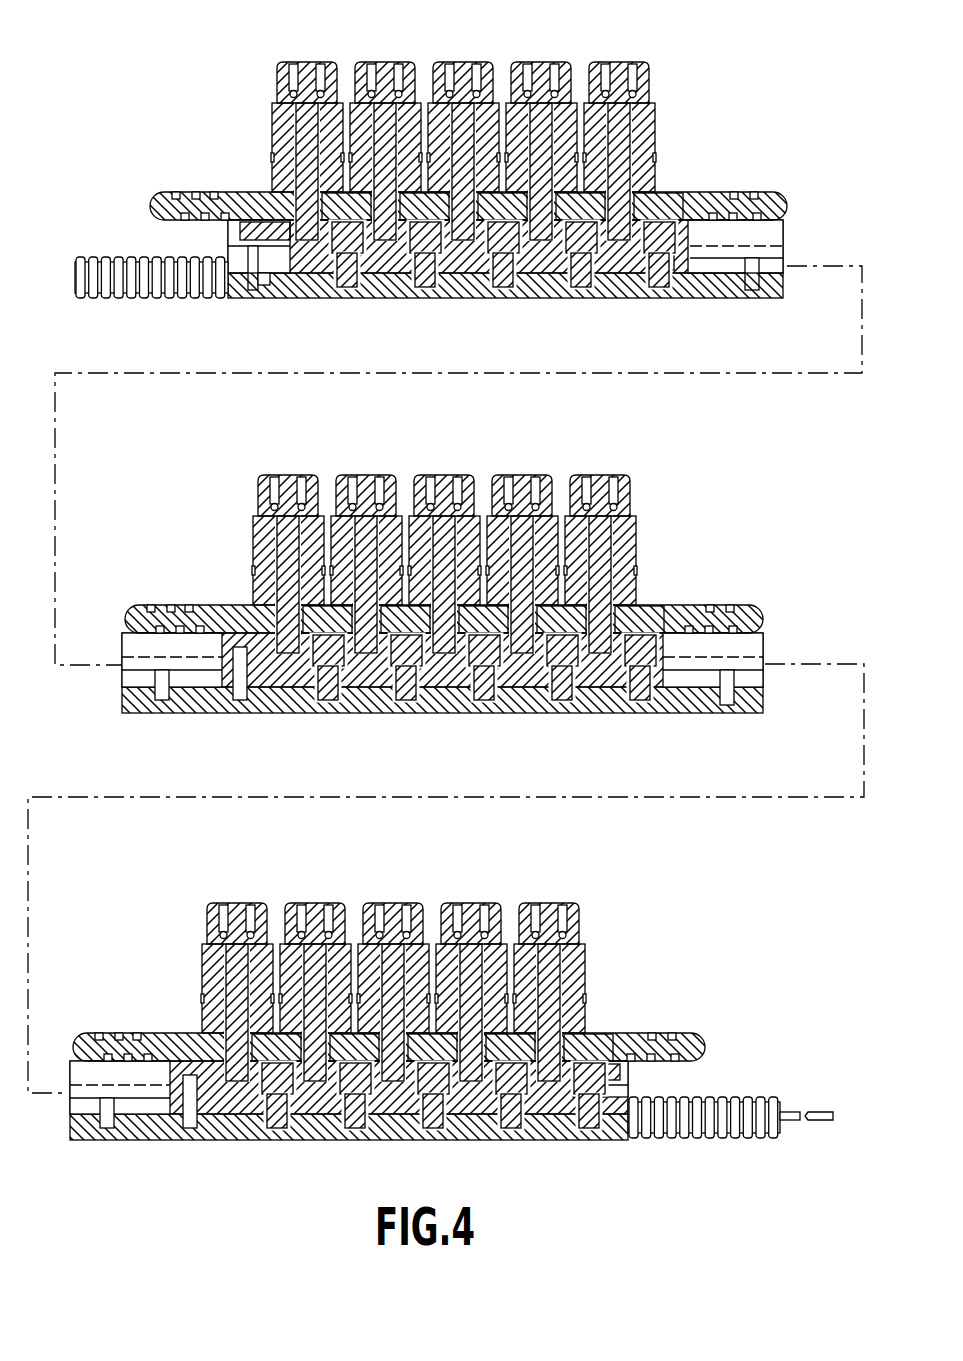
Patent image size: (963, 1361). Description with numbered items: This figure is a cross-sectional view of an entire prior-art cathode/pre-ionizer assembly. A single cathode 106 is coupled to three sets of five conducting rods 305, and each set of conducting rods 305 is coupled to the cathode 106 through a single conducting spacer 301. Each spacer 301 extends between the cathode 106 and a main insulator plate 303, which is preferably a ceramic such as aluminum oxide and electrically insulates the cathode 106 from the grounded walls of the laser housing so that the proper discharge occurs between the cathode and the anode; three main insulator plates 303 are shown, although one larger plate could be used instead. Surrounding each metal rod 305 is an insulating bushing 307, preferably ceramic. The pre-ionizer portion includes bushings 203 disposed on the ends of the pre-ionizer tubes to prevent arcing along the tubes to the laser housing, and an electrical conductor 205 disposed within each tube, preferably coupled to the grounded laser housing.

The cathode 106 is at (318, 299).
The bushing 203 is at (103, 300).
The electrical conductor 205 is at (817, 1125).
The spacer 301 is at (383, 258).
The main insulator plate 303 is at (157, 203).
The metal rod 305 is at (311, 63).
The insulating bushing 307 is at (273, 116).